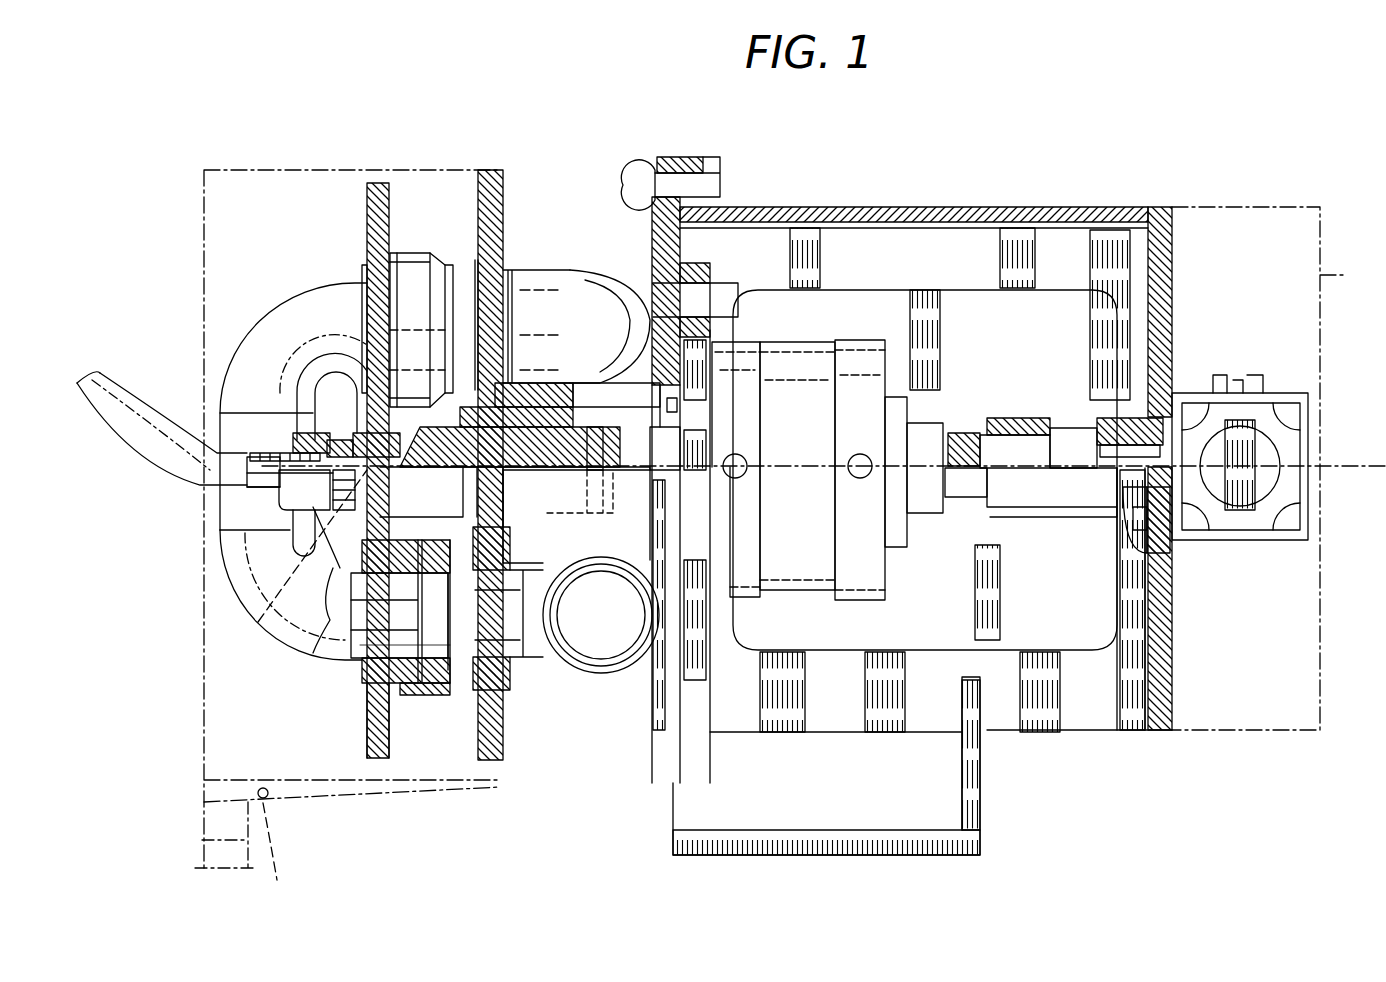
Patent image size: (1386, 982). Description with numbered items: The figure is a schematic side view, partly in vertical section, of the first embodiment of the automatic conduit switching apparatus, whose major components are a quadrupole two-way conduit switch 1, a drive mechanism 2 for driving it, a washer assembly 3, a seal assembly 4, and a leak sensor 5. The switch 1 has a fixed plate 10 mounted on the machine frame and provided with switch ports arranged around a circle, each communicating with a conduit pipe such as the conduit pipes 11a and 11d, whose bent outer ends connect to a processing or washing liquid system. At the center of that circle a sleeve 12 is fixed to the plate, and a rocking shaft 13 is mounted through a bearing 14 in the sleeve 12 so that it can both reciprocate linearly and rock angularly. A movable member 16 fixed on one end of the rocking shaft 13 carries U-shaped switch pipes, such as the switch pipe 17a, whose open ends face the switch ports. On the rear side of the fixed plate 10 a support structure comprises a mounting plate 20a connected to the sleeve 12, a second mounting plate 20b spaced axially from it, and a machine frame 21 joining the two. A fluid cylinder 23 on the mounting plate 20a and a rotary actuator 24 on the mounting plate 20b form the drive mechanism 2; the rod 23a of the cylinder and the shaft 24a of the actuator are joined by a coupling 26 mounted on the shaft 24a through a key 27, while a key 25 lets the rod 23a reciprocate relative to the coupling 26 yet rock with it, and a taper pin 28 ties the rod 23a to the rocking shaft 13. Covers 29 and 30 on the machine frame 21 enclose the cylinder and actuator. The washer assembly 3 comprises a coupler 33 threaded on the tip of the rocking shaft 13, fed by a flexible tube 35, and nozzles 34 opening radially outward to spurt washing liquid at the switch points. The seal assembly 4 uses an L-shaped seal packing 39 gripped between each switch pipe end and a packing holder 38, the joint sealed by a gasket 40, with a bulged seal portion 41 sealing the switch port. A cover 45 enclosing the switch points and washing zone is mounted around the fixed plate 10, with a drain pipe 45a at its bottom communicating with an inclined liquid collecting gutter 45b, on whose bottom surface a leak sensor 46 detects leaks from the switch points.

The quadrupole two-way conduit switch 1 is at (447, 142).
The drive mechanism 2 is at (963, 372).
The washer assembly 3 is at (270, 447).
The seal assembly 4 is at (428, 710).
The leak sensor 5 is at (302, 820).
The fixed plate 10 is at (498, 200).
The conduit pipe 11a is at (566, 290).
The conduit pipe 11d is at (548, 640).
The sleeve 12 is at (597, 385).
The rocking shaft 13 is at (357, 430).
The bearing 14 is at (530, 410).
The movable member 16 is at (385, 185).
The U-shaped switch pipe 17a is at (238, 387).
The mounting plate 20a is at (683, 260).
The second mounting plate 20b is at (1160, 210).
The machine frame 21 is at (940, 225).
The fluid cylinder 23 is at (810, 345).
The rod 23a is at (985, 495).
The rotary actuator 24 is at (1285, 530).
The shaft 24a is at (1172, 530).
The key 25 is at (1015, 437).
The coupling 26 is at (1070, 435).
The key 27 is at (1175, 490).
The taper pin 28 is at (605, 470).
The cover 29 is at (1030, 215).
The cover 30 is at (1325, 272).
The coupler 33 is at (310, 437).
The nozzle 34 is at (392, 450).
The flexible tube 35 is at (127, 430).
The packing holder 38 is at (385, 715).
The seal packing 39 is at (417, 578).
The gasket 40 is at (385, 687).
The bulged seal portion 41 is at (447, 670).
The cover 45 is at (205, 632).
The drain pipe 45a is at (215, 830).
The liquid collecting gutter 45b is at (385, 798).
The leak sensor 46 is at (268, 830).